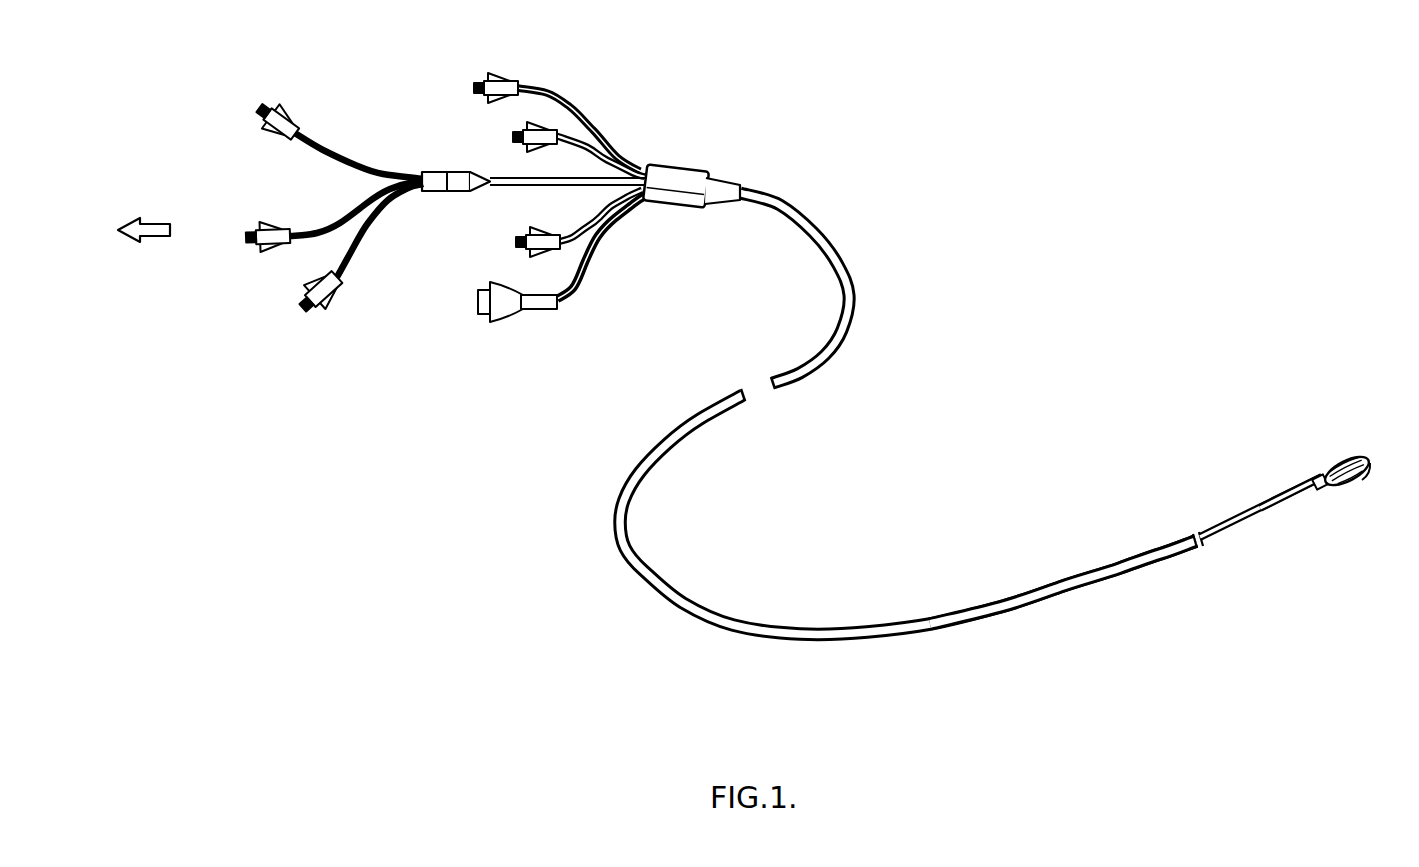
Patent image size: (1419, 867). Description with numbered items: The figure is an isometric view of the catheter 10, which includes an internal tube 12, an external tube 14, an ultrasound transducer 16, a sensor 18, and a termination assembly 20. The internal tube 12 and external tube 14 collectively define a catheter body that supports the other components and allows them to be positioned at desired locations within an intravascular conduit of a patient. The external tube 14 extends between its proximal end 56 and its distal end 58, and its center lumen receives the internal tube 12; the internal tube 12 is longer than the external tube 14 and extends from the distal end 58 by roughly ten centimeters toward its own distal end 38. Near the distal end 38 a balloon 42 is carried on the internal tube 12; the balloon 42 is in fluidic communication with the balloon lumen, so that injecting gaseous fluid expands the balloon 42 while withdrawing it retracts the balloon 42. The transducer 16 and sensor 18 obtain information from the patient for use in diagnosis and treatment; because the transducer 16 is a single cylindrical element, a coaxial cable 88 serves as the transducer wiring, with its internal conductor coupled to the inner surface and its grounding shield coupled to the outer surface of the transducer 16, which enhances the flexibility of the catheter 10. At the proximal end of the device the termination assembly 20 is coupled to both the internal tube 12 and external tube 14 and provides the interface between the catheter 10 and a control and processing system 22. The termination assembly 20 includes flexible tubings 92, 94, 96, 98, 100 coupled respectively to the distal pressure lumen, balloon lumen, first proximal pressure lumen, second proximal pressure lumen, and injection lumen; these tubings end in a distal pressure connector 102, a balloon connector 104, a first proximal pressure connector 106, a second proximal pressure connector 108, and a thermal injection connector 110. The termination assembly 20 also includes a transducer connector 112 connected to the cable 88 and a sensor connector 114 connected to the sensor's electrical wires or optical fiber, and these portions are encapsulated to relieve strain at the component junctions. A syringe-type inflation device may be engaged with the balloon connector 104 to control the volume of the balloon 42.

The catheter 10 is at (575, 509).
The internal tube 12 is at (1262, 503).
The external tube 14 is at (760, 636).
The ultrasound transducer 16 is at (1138, 567).
The sensor 18 is at (1298, 500).
The termination assembly 20 is at (462, 298).
The control and processing system 22 is at (178, 193).
The distal end 38 is at (1370, 461).
The balloon 42 is at (1368, 452).
The proximal end 56 is at (768, 172).
The distal end 58 is at (1163, 547).
The transducer wiring 88 is at (586, 273).
The flexible tubing 92 is at (327, 152).
The flexible tubing 94 is at (348, 208).
The flexible tubing 96 is at (590, 220).
The flexible tubing 98 is at (590, 152).
The flexible tubing 100 is at (576, 110).
The distal pressure connector 102 is at (298, 123).
The balloon connector 104 is at (275, 253).
The first proximal pressure connector 106 is at (512, 241).
The second proximal pressure connector 108 is at (512, 137).
The thermal injection connector 110 is at (515, 55).
The transducer connector 112 is at (513, 312).
The sensor connector 114 is at (327, 300).